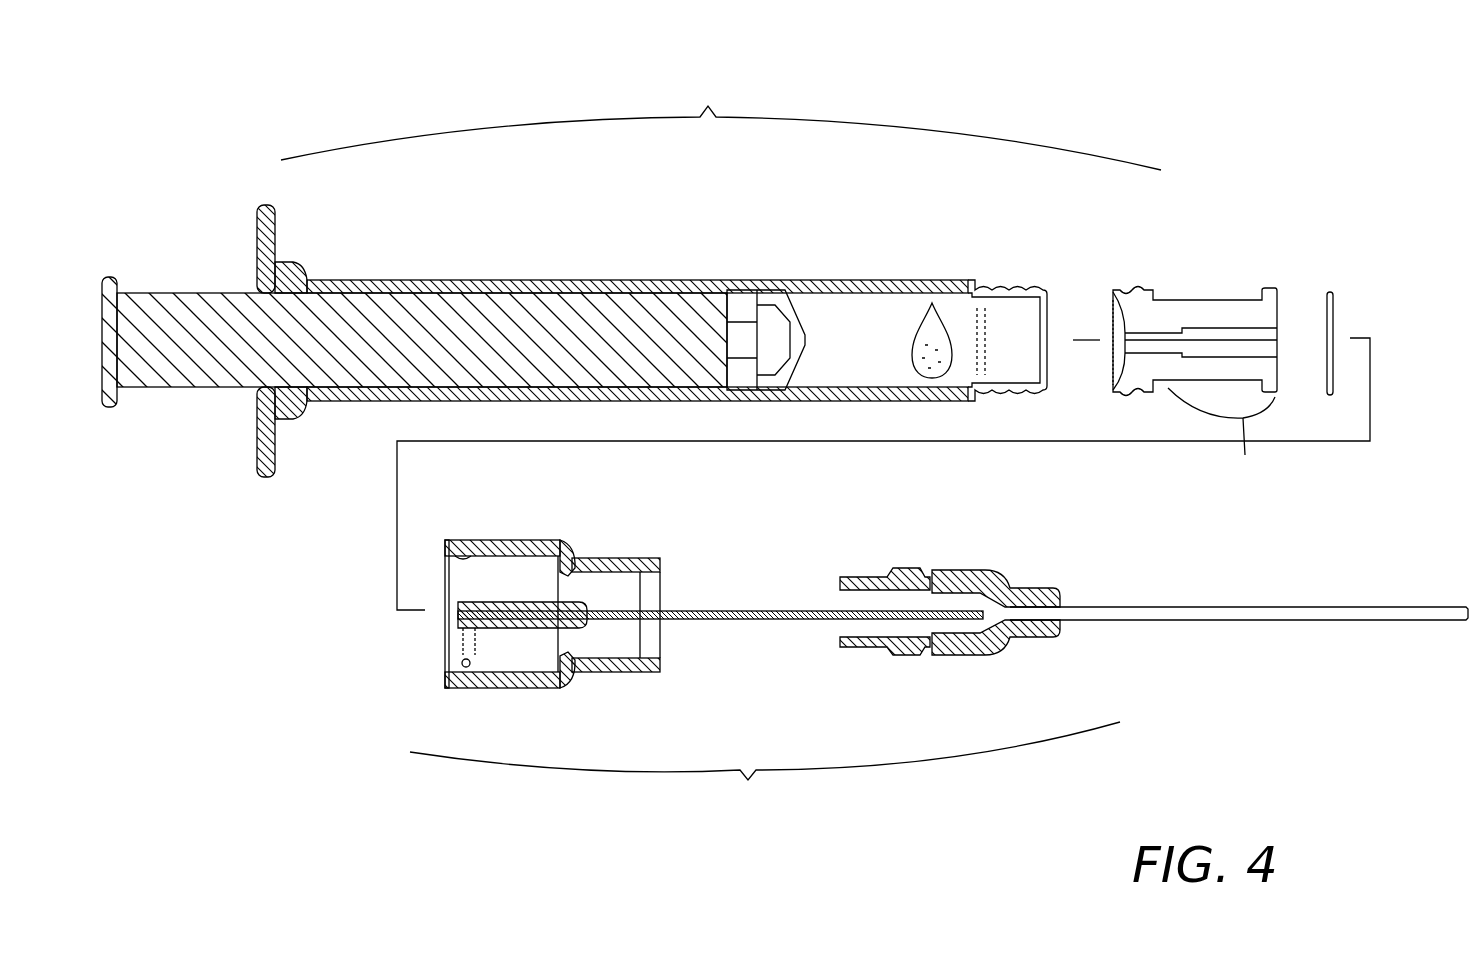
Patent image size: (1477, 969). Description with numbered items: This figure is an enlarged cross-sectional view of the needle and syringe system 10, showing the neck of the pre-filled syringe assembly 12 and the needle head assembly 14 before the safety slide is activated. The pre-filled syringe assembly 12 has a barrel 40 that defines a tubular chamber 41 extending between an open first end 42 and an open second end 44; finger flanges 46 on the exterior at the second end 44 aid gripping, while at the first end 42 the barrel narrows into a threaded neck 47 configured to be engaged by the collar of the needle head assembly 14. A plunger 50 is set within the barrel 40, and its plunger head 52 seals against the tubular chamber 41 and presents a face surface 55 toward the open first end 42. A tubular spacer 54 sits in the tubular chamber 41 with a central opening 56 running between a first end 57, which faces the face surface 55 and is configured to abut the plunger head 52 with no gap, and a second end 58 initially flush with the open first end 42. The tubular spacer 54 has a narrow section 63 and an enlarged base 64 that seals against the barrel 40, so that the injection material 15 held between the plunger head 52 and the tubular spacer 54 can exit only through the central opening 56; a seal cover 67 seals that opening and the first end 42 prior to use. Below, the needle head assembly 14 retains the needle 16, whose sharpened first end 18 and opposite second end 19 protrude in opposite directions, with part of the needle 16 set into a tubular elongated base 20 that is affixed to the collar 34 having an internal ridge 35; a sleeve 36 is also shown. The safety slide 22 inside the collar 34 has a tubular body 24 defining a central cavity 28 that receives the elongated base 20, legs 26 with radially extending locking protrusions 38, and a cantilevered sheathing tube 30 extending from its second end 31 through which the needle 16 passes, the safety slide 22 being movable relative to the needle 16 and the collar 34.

The needle and syringe system 10 is at (1210, 166).
The pre-filled syringe assembly 12 is at (721, 115).
The needle head assembly 14 is at (765, 771).
The injection material 15 is at (932, 378).
The needle 16 is at (752, 608).
The sharpened first end 18 is at (1000, 614).
The second end 19 is at (458, 610).
The elongated base 20 is at (462, 626).
The safety slide 22 is at (952, 570).
The tubular body 24 is at (958, 640).
The legs 26 is at (878, 648).
The central cavity 28 is at (985, 597).
The sheathing tube 30 is at (1205, 605).
The second end 31 is at (1060, 594).
The collar 34 is at (520, 690).
The internal ridge 35 is at (572, 575).
The sleeve 36 is at (633, 557).
The locking protrusions 38 is at (850, 577).
The barrel 40 is at (832, 290).
The tubular chamber 41 is at (893, 308).
The open first end 42 is at (1050, 320).
The open second end 44 is at (260, 395).
The finger flanges 46 is at (277, 237).
The threaded neck 47 is at (1008, 280).
The plunger 50 is at (190, 290).
The plunger head 52 is at (760, 300).
The tubular spacer 54 is at (1215, 285).
The face surface 55 is at (808, 350).
The central opening 56 is at (1197, 342).
The first end 57 is at (1113, 360).
The second end 58 is at (1280, 298).
The narrow section 63 is at (1221, 442).
The enlarged base 64 is at (1140, 394).
The seal cover 67 is at (1335, 322).